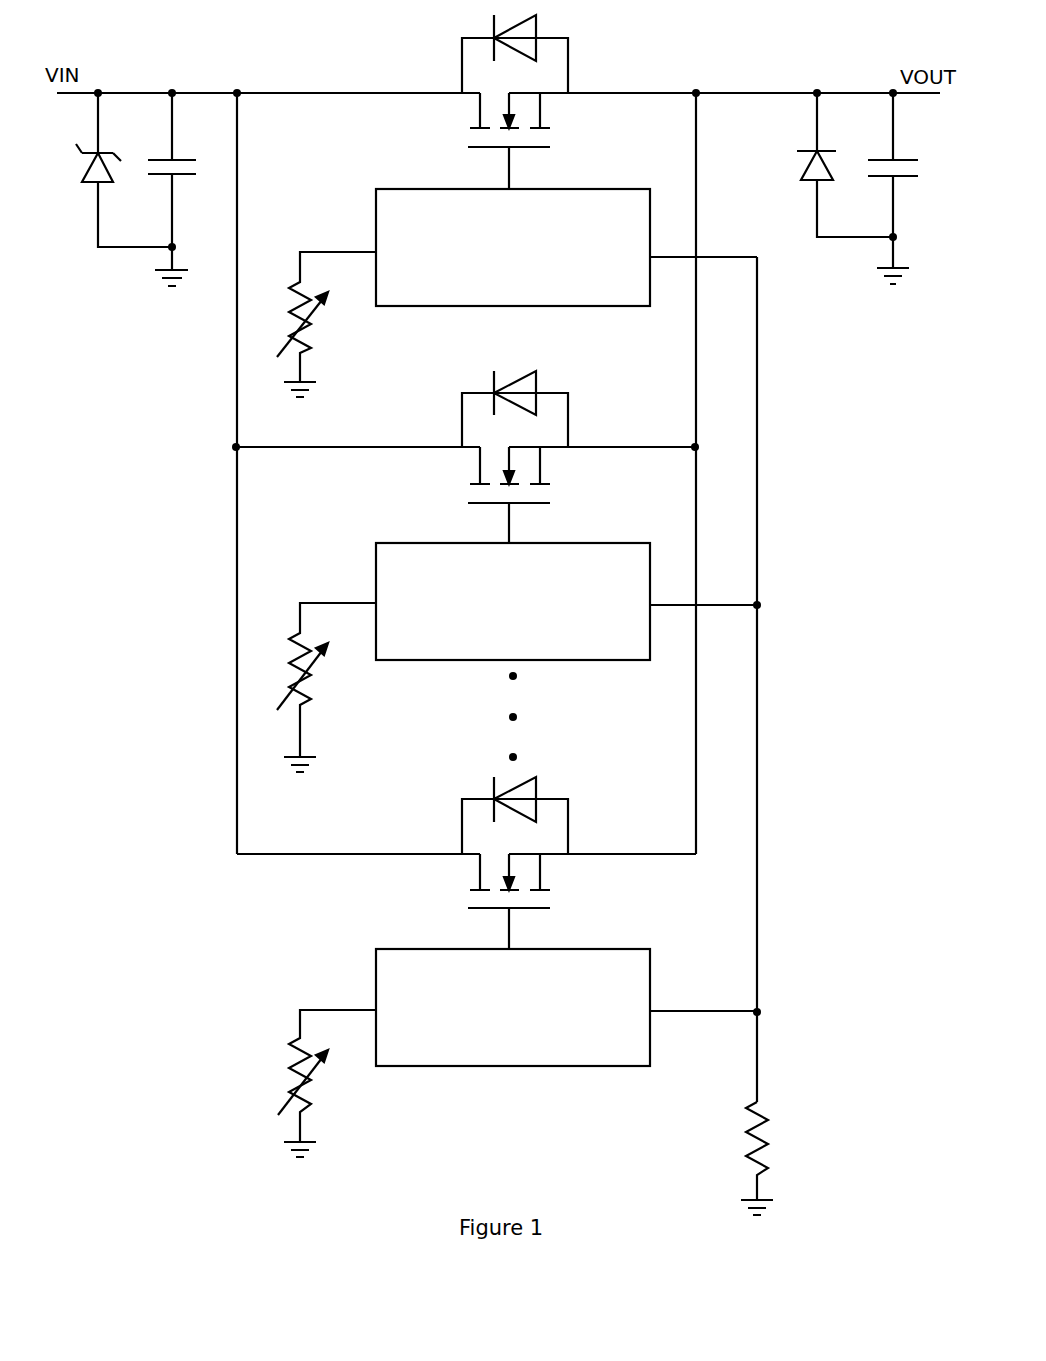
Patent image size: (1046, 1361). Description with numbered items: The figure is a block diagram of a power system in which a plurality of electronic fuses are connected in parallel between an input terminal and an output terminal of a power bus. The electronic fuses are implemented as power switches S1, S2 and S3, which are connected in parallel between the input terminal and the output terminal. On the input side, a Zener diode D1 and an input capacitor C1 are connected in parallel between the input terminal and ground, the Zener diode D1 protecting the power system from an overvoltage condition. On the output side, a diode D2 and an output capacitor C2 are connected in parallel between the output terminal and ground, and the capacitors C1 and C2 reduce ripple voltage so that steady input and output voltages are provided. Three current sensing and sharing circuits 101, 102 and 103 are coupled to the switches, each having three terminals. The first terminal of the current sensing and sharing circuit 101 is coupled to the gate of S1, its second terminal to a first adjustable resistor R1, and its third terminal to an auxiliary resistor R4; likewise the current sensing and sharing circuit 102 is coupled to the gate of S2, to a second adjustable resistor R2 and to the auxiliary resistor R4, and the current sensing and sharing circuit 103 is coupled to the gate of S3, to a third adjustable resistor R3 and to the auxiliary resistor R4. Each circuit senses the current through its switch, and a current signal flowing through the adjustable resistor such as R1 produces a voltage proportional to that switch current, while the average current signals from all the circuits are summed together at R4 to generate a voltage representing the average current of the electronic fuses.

The current sensing and sharing circuit 101 is at (566, 247).
The current sensing and sharing circuit 102 is at (566, 601).
The current sensing and sharing circuit 103 is at (566, 1007).
The power switch S1 is at (539, 102).
The power switch S2 is at (539, 457).
The power switch S3 is at (539, 863).
The first adjustable resistor R1 is at (326, 324).
The second adjustable resistor R2 is at (326, 687).
The third adjustable resistor R3 is at (327, 1083).
The auxiliary resistor R4 is at (772, 1158).
The Zener diode D1 is at (107, 170).
The diode D2 is at (829, 165).
The input capacitor C1 is at (188, 189).
The output capacitor C2 is at (911, 188).